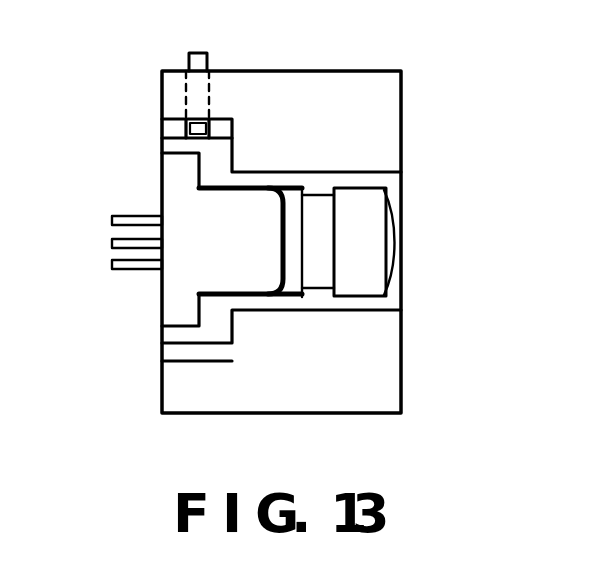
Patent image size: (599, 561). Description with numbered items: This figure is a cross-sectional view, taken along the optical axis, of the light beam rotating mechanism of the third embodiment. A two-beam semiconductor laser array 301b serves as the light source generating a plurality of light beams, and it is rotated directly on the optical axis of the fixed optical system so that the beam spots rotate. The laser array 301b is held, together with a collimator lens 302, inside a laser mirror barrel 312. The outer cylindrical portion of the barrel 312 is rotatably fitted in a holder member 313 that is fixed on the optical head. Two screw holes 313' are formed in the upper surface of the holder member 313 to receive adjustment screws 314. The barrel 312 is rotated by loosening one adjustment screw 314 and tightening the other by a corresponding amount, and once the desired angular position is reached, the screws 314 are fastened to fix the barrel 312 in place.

The holder member 313 is at (281, 212).
The adjustment screw 314 is at (204, 52).
The screw hole 313' is at (139, 95).
The laser mirror barrel 312 is at (328, 180).
The collimator lens 302 is at (365, 232).
The two-beam semiconductor laser array 301b is at (183, 278).